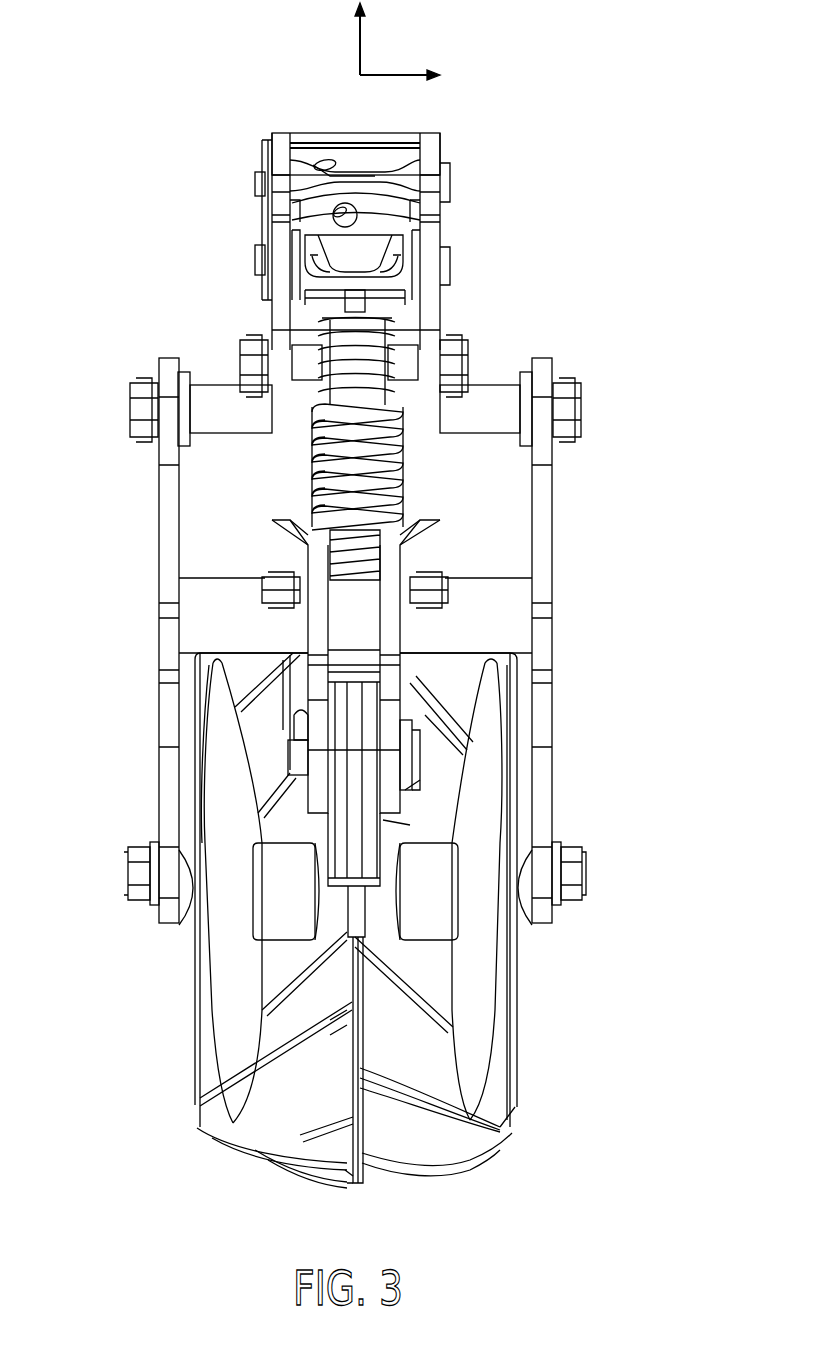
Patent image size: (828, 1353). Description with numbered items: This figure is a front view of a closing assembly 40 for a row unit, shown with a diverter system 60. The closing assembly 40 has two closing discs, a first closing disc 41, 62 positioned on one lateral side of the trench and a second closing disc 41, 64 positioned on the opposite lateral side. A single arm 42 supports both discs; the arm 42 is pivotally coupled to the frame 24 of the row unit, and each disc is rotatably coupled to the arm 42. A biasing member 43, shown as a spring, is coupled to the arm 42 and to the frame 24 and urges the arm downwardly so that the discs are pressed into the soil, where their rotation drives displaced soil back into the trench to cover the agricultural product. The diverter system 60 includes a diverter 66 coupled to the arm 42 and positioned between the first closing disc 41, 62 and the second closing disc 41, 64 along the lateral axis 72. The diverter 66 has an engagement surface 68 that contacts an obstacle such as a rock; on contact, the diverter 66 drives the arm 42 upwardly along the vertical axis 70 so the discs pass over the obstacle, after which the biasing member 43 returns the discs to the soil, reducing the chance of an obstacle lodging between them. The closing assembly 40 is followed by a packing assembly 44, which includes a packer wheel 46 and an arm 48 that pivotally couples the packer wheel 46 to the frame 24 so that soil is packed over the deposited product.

The frame 24 is at (272, 315).
The closing assembly 40 is at (598, 836).
The right closing wheel 41, 62 is at (485, 1000).
The left closing wheel 41, 64 is at (222, 792).
The arm 42 is at (410, 827).
The biasing member 43 is at (403, 468).
The packing assembly 44 is at (140, 566).
The packer wheel 46 is at (505, 1110).
The arm 48 is at (540, 540).
The diverter system 60 is at (337, 946).
The diverter 66 is at (363, 865).
The engagement surface 68 is at (357, 893).
The vertical axis 70 is at (360, 40).
The lateral axis 72 is at (393, 75).